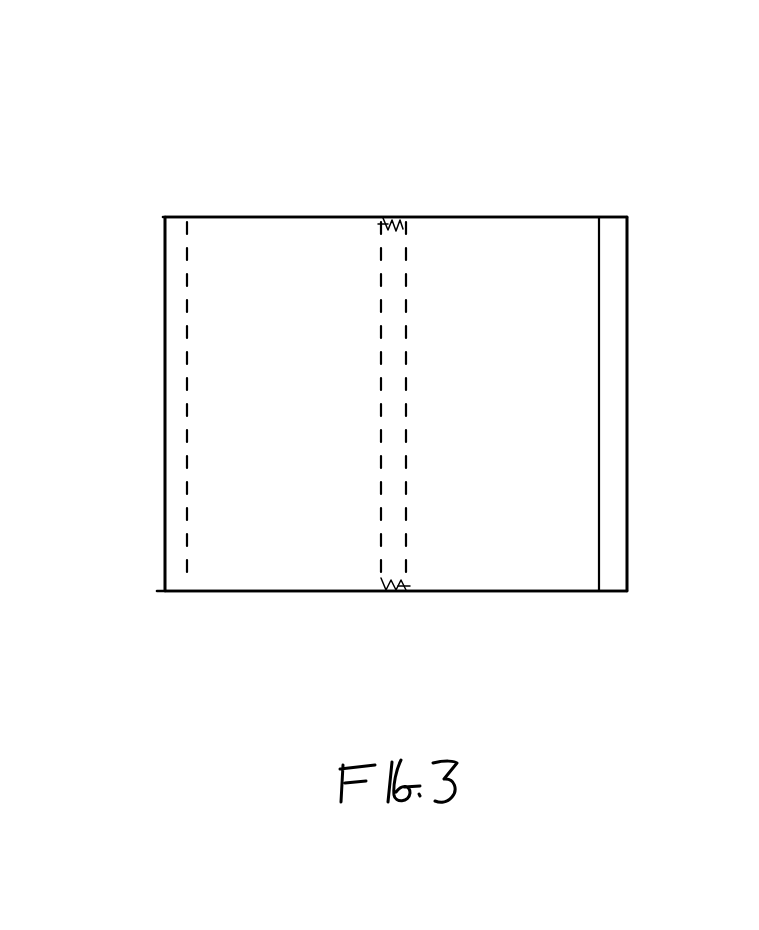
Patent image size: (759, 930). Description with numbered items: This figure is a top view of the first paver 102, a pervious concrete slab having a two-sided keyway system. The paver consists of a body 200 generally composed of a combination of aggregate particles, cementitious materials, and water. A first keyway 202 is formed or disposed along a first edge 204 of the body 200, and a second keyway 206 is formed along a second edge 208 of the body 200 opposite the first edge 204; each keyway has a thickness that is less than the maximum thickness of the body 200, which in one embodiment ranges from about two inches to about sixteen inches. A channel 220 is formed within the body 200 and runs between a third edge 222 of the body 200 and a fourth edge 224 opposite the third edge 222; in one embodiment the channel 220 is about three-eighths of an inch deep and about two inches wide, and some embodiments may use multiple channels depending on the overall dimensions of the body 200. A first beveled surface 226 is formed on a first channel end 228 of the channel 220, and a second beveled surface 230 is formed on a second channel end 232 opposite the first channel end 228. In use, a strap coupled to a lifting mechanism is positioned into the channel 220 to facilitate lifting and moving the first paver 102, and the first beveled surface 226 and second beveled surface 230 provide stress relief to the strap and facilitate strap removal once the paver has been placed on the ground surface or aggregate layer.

The first paver 102 is at (396, 315).
The body 200 is at (396, 404).
The first keyway 202 is at (117, 404).
The first edge 204 is at (119, 399).
The second keyway 206 is at (666, 404).
The second edge 208 is at (664, 404).
The channel 220 is at (443, 365).
The third edge 222 is at (380, 633).
The fourth edge 224 is at (381, 175).
The first beveled surface 226 is at (389, 615).
The first channel end 228 is at (442, 542).
The second beveled surface 230 is at (373, 200).
The second channel end 232 is at (356, 263).